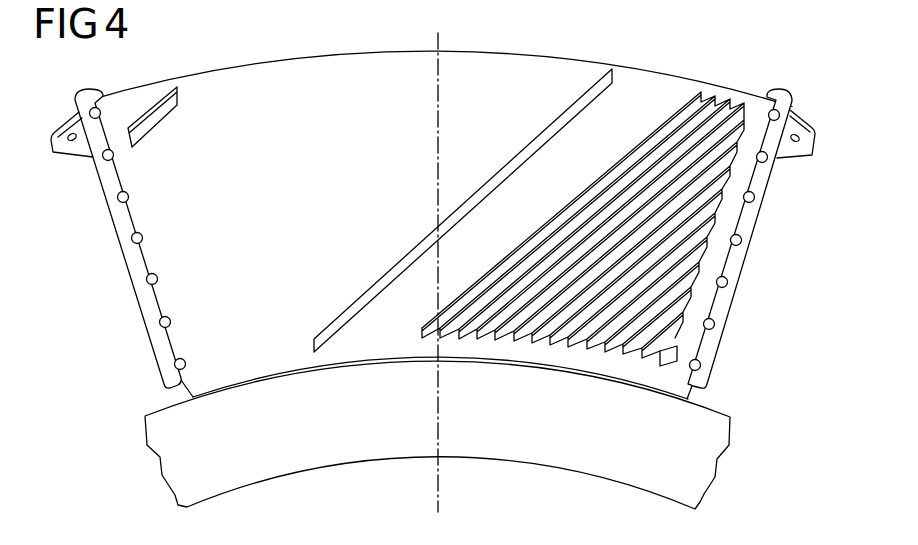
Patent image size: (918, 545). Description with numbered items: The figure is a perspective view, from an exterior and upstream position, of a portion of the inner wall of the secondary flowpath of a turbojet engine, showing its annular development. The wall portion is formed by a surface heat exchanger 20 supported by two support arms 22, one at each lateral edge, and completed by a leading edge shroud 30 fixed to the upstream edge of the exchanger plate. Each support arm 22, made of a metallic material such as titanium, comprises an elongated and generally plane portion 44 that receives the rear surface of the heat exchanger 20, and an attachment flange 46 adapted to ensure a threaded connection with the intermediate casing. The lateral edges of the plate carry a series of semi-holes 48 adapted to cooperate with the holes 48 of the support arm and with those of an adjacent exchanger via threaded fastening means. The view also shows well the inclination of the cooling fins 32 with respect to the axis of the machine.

The heat exchanger 20 is at (660, 78).
The support arm 22 is at (435, 230).
The shroud 30 is at (474, 452).
The cooling fins 32 is at (583, 202).
The elongated portion 44 is at (103, 180).
The attachment flange 46 is at (73, 123).
The semi-holes 48 is at (107, 234).